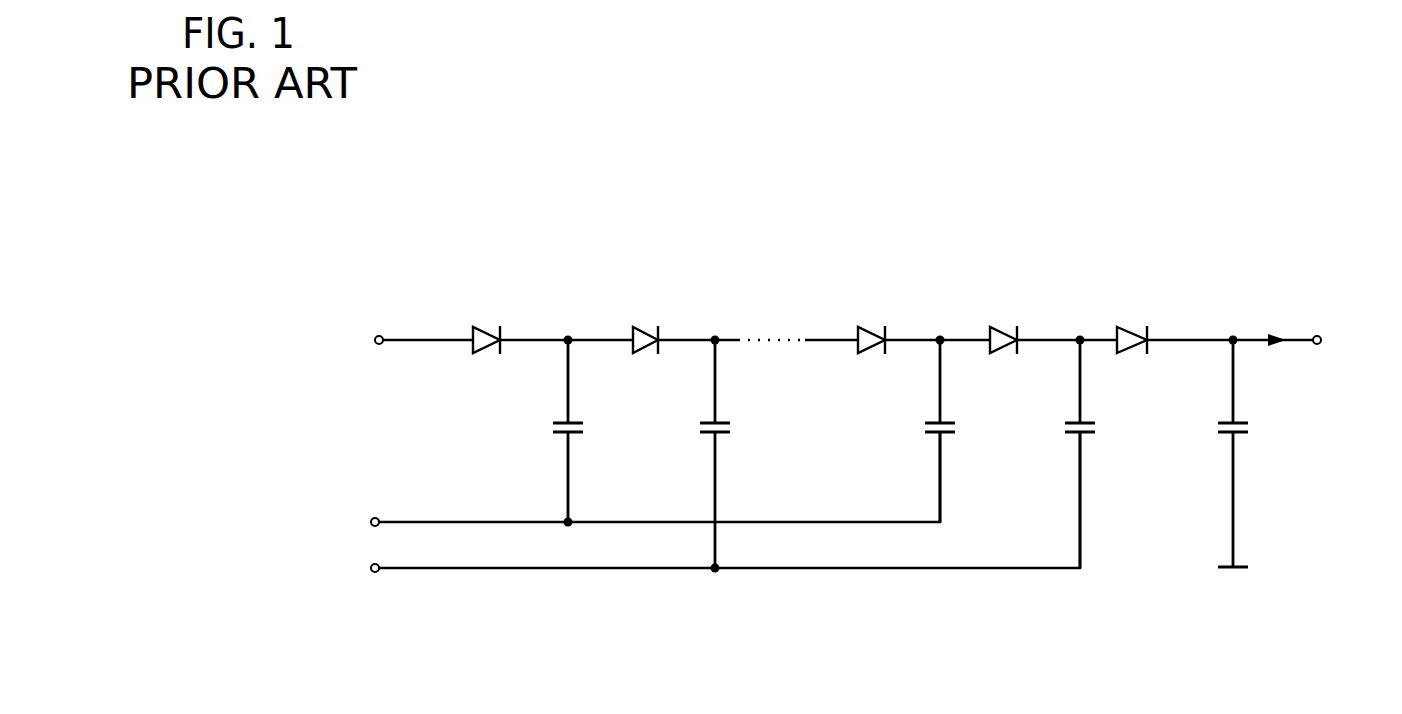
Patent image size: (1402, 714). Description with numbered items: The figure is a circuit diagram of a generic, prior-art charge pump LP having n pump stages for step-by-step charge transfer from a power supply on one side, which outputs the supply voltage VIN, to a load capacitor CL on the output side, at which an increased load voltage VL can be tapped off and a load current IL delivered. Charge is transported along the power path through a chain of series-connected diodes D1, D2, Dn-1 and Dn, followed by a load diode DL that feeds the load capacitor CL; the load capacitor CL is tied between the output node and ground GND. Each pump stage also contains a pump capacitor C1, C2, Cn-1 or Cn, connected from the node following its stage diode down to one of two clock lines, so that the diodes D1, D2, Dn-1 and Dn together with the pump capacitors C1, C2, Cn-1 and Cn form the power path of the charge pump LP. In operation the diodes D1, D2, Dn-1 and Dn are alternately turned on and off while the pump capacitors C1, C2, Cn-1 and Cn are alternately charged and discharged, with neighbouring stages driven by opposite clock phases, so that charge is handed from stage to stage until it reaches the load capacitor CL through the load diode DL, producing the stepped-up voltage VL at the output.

The diode D1 is at (483, 318).
The diode D2 is at (647, 318).
The diode Dn-1 is at (872, 317).
The diode Dn is at (997, 317).
The load diode DL is at (1131, 317).
The pump capacitor C1 is at (589, 431).
The pump capacitor C2 is at (740, 454).
The pump capacitor Cn-1 is at (969, 431).
The pump capacitor Cn is at (1101, 454).
The load capacitor CL is at (1255, 453).
The charge pump LP is at (853, 245).
The input voltage VIN is at (368, 329).
The load voltage VL is at (1320, 332).
The load current IL is at (1268, 308).
The ground GND is at (1239, 600).